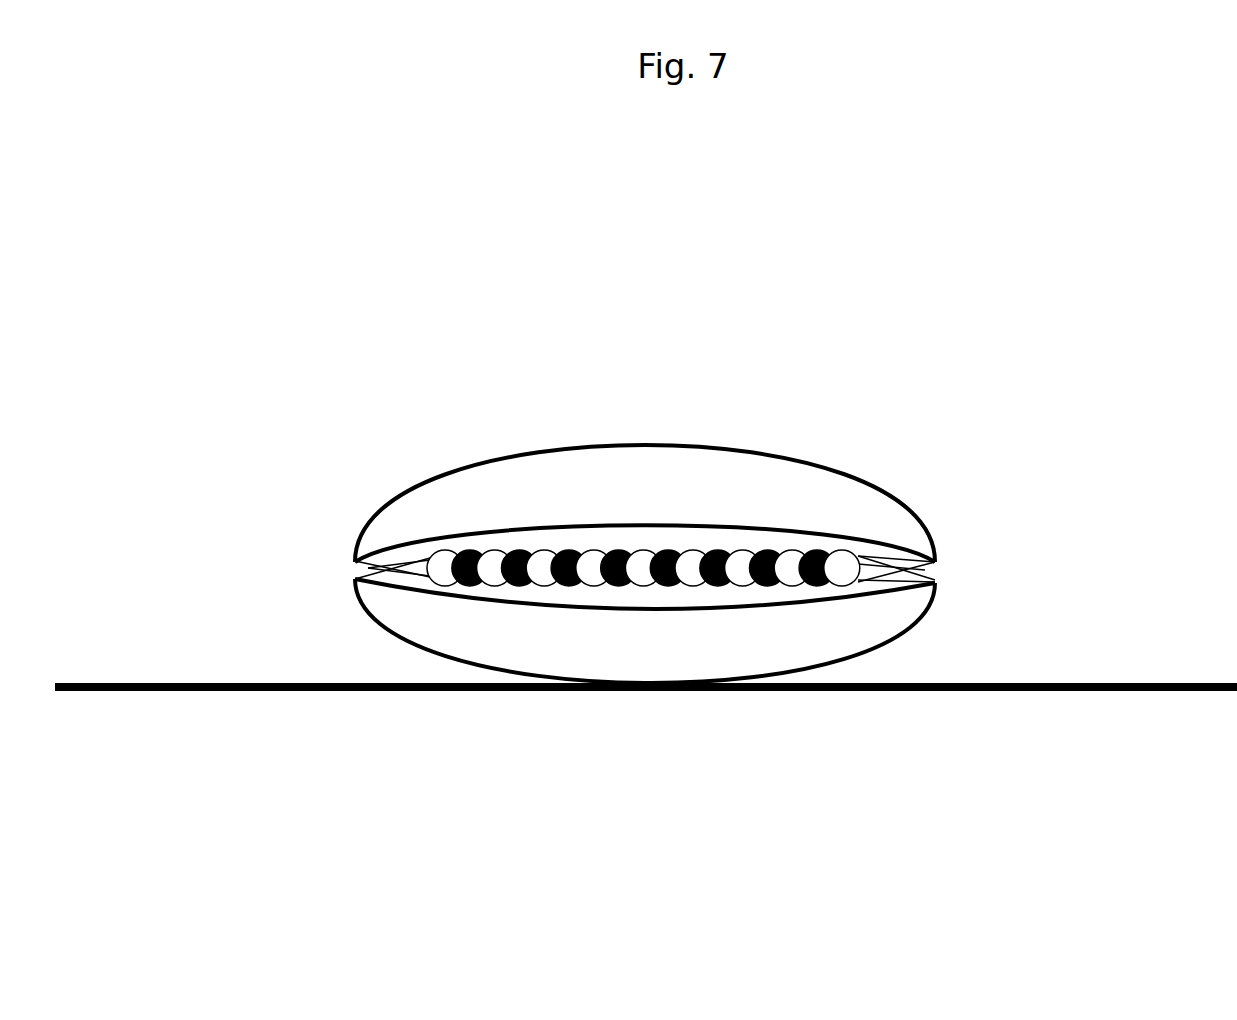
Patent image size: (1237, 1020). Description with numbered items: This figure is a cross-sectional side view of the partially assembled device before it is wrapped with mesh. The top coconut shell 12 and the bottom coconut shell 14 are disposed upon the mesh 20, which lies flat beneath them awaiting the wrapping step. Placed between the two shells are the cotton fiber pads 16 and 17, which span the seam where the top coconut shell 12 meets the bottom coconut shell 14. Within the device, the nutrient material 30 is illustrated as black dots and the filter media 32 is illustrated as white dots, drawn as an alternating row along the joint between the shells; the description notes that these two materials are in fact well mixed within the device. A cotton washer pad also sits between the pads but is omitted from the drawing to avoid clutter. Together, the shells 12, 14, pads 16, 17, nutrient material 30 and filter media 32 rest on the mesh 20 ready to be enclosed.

The top coconut shell 12 is at (787, 496).
The bottom coconut shell 14 is at (823, 645).
The cotton fiber pad 16 is at (890, 544).
The cotton fiber pad 17 is at (898, 575).
The mesh 20 is at (433, 691).
The nutrient material 30 is at (607, 386).
The filter media 32 is at (700, 560).